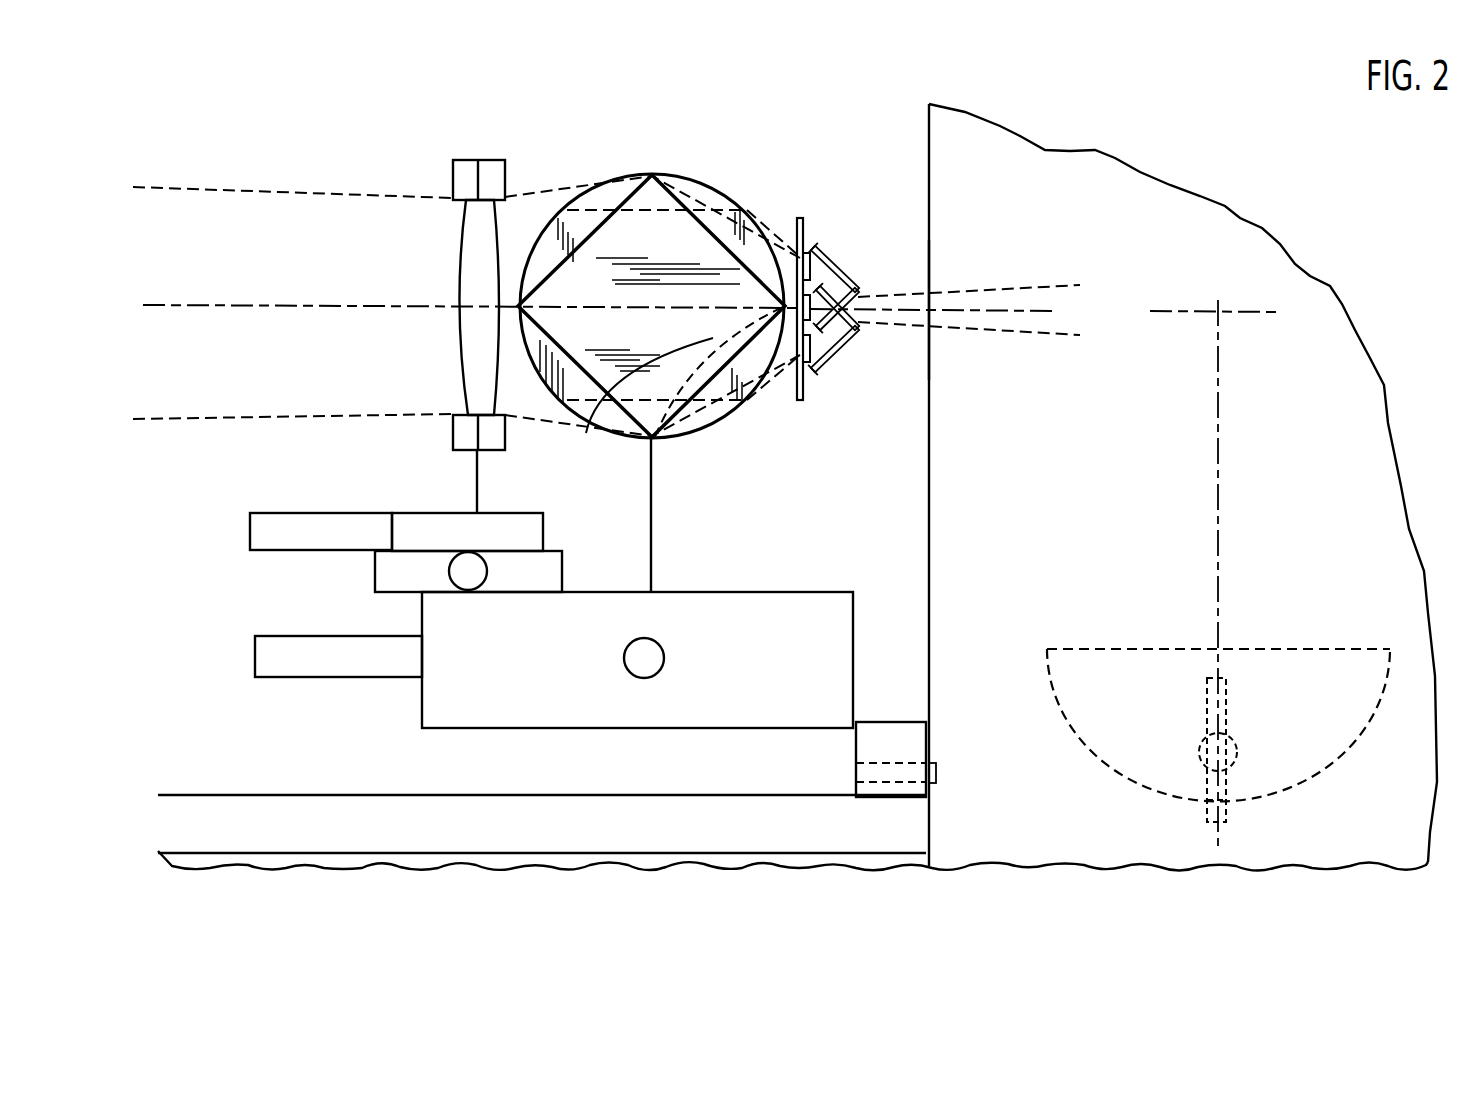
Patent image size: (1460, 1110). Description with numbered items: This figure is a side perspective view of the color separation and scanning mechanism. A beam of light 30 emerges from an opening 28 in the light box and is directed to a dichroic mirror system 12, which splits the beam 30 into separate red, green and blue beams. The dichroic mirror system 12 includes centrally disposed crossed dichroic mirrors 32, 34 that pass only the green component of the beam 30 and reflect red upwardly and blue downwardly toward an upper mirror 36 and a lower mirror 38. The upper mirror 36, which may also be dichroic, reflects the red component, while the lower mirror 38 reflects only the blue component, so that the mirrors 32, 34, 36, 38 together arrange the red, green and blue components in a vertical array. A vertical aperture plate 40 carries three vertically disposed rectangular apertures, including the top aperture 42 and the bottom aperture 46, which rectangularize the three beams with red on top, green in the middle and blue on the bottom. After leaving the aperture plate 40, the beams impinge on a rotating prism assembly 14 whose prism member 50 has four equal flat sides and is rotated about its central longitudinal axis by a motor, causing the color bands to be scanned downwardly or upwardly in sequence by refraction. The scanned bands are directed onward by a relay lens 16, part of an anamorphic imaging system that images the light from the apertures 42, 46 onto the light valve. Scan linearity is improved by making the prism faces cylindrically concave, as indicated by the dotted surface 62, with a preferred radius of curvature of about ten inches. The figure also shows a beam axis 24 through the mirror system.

The dichroic mirror system 12 is at (922, 295).
The rotating prism assembly 14 is at (651, 279).
The relay lens 16 is at (473, 152).
The light beam 24 is at (838, 345).
The opening 28 is at (929, 147).
The beam of light 30 is at (907, 288).
The crossed dichroic mirror 32 is at (858, 300).
The crossed dichroic mirror 34 is at (858, 332).
The upper mirror 36 is at (944, 197).
The lower mirror 38 is at (832, 375).
The vertical aperture plate 40 is at (798, 218).
The rectangular aperture 42 is at (797, 256).
The rectangular aperture 46 is at (745, 347).
The prism member 50 is at (620, 205).
The dotted surface 62 is at (587, 427).